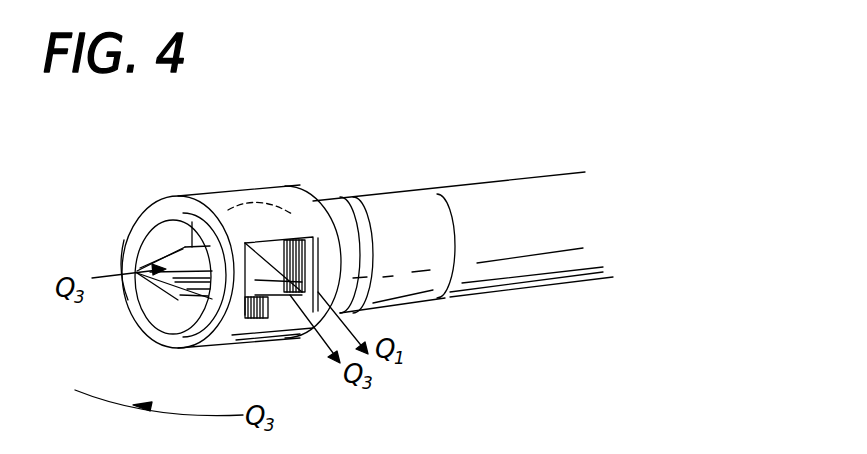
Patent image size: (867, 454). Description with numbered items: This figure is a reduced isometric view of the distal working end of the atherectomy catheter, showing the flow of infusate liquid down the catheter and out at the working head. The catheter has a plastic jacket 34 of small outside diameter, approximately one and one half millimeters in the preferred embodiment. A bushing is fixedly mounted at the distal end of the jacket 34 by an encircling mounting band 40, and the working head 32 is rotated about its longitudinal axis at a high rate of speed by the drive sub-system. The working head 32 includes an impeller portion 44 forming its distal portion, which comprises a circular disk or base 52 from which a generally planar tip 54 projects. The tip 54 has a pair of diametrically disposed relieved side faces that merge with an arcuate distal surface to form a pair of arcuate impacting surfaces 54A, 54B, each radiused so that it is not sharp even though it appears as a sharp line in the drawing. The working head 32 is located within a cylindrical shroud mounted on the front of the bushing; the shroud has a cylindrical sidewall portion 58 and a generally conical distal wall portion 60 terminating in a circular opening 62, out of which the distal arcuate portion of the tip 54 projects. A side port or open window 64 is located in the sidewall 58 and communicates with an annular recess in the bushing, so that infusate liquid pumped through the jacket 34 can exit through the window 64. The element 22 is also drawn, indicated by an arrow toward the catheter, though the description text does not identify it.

The applicator device 22 is at (525, 208).
The stem 32 is at (192, 222).
The tubular barrel 34 is at (487, 200).
The collar 40 is at (408, 203).
The key 44 is at (262, 305).
The flange 52 is at (342, 235).
The valve cone 54 is at (148, 302).
The first cone section 54A is at (150, 230).
The second cone section 54B is at (152, 340).
The sleeve 58 is at (227, 207).
The inner rim 60 is at (148, 215).
The outer lip 62 is at (133, 251).
The seal 64 is at (287, 233).